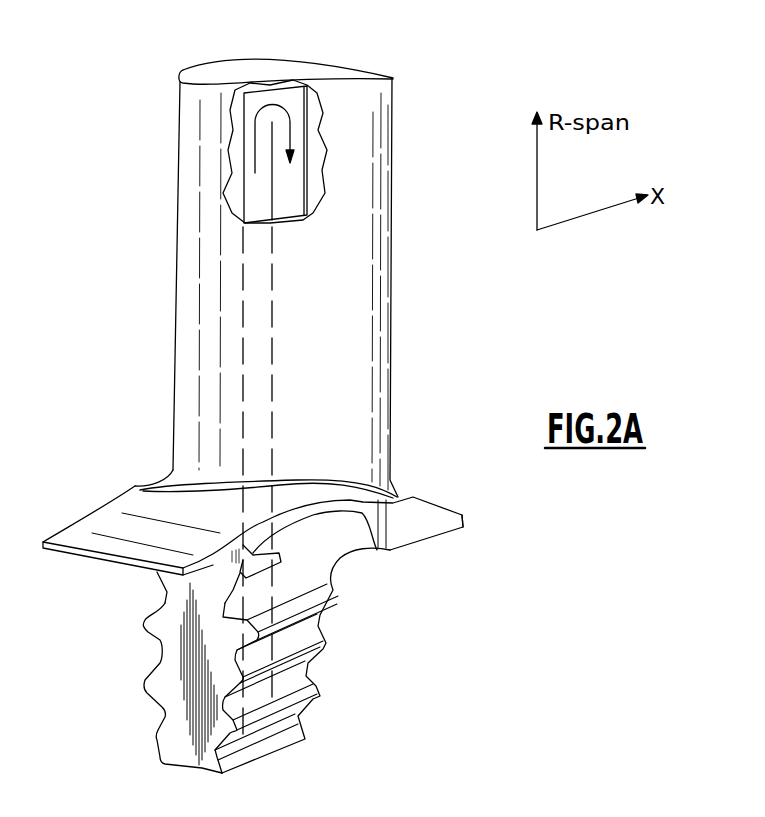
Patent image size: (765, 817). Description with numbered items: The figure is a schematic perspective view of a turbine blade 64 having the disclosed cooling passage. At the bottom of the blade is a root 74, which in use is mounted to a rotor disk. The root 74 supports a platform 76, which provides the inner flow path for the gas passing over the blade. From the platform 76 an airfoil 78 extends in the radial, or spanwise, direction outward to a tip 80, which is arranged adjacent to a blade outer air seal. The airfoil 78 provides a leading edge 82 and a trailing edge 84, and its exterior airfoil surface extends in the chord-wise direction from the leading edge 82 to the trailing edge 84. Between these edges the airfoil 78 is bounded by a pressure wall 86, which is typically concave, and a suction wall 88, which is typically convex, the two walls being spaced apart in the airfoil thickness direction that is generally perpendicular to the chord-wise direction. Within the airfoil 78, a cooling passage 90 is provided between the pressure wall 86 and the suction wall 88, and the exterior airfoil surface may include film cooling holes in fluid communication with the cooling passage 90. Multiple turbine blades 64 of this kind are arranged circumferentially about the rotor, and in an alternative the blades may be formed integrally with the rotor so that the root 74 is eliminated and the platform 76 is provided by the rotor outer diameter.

The turbine blade 64 is at (145, 238).
The root 74 is at (185, 675).
The platform 76 is at (290, 495).
The airfoil 78 is at (332, 375).
The tip 80 is at (197, 62).
The leading edge 82 is at (177, 235).
The trailing edge 84 is at (394, 226).
The pressure wall 86 is at (312, 285).
The suction wall 88 is at (315, 56).
The cooling passage 90 is at (313, 165).